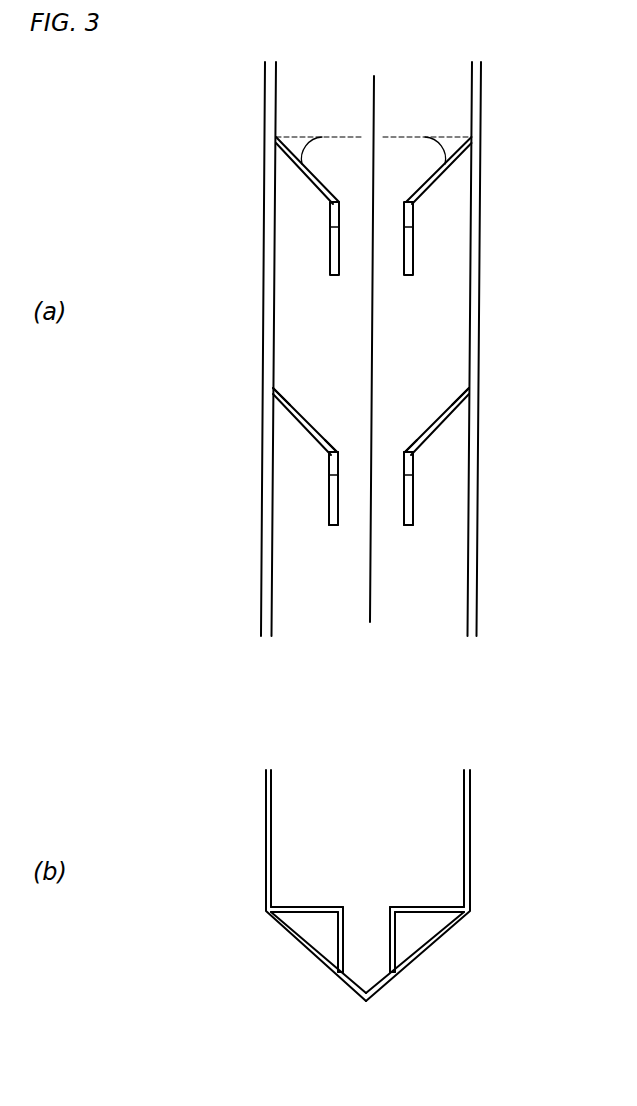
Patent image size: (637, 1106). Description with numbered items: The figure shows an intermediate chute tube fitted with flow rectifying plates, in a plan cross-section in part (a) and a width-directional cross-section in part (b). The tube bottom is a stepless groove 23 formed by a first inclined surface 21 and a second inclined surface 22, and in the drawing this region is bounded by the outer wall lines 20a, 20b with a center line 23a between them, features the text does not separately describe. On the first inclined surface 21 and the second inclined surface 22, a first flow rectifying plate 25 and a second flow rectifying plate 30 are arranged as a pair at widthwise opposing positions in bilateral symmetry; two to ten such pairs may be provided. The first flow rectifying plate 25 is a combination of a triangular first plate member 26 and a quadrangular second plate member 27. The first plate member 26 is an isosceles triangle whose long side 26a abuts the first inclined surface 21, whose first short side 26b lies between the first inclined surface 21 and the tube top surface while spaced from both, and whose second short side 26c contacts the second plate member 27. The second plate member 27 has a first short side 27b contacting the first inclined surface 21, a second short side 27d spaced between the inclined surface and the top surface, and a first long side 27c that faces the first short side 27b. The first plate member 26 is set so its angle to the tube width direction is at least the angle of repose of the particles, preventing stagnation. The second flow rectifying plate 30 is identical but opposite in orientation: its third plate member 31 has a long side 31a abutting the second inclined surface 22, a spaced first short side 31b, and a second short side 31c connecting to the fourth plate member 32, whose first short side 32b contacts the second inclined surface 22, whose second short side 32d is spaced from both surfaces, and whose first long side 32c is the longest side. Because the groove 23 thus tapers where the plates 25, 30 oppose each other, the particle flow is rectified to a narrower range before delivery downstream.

The first side wall 20a is at (265, 105).
The second side wall 20b is at (481, 96).
The central partition plate 23a is at (374, 106).
The first inclined surface 21 is at (300, 315).
The second inclined surface 22 is at (440, 332).
The groove 23 is at (353, 344).
The first flow rectifying plate 25 is at (277, 605).
The first plate member 26 is at (303, 172).
The long side 26a is at (302, 940).
The first short side 26b is at (285, 403).
The second short side 26c is at (338, 455).
The second plate member 27 is at (330, 237).
The first short side 27b is at (340, 955).
The first long side 27c is at (332, 512).
The second short side 27d is at (330, 457).
The second flow rectifying plate 30 is at (484, 596).
The third plate member 31 is at (445, 172).
The long side 31a is at (443, 940).
The first short side 31b is at (458, 402).
The second short side 31c is at (405, 455).
The fourth plate member 32 is at (413, 262).
The first short side 32b is at (392, 970).
The first long side 32c is at (413, 512).
The second short side 32d is at (413, 457).